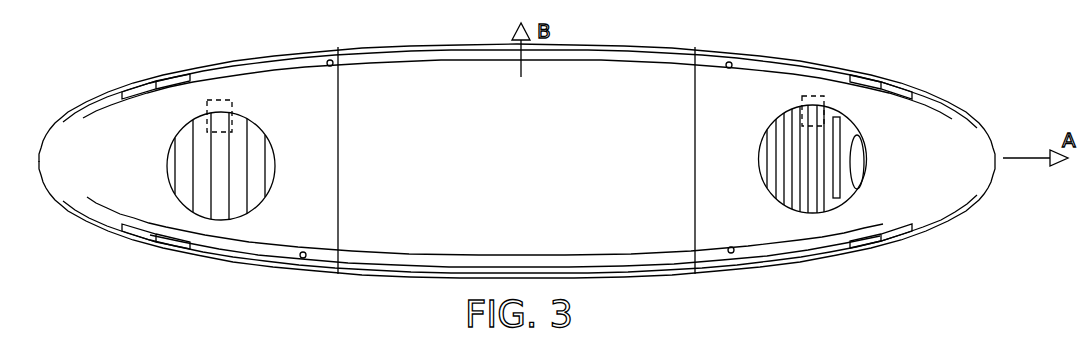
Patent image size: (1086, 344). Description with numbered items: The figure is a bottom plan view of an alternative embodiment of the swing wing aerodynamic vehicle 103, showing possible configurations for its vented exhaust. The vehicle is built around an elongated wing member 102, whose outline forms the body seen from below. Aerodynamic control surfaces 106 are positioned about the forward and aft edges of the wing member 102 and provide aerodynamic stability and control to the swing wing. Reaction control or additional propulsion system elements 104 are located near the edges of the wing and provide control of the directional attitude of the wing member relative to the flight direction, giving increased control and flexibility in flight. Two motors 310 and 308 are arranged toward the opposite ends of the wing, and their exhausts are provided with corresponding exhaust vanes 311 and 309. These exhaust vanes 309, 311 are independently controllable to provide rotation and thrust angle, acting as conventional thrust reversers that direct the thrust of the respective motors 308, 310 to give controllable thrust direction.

The elongated wing member 102 is at (663, 257).
The aerodynamic vehicle 103 is at (402, 285).
The additional propulsion system elements 104 is at (327, 61).
The aerodynamic control surfaces 106 is at (138, 79).
The motor 308 is at (802, 100).
The exhaust vane 309 is at (838, 167).
The motor 310 is at (237, 101).
The exhaust vane 311 is at (180, 142).